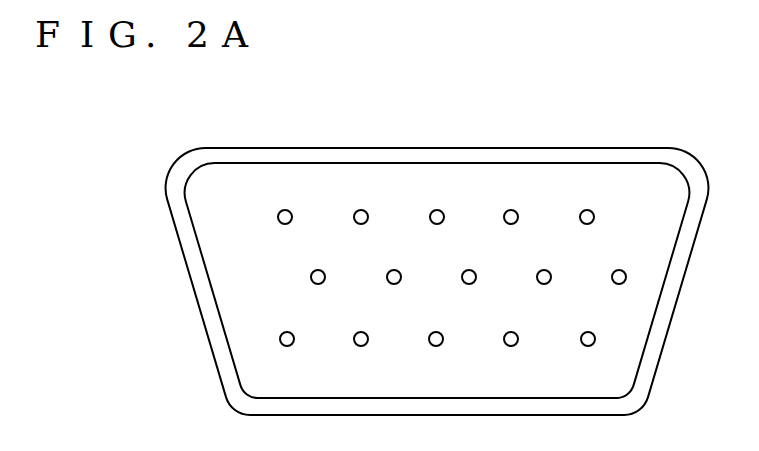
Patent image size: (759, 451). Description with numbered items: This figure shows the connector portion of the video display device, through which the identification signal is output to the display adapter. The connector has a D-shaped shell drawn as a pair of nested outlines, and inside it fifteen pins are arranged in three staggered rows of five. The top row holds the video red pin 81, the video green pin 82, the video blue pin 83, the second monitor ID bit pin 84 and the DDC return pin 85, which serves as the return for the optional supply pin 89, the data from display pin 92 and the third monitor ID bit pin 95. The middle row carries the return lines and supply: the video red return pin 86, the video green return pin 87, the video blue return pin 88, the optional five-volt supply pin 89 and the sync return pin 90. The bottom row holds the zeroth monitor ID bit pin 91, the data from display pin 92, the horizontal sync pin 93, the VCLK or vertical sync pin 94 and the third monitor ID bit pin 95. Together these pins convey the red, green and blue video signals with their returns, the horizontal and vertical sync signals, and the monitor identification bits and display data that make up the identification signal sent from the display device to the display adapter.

The video red pin 81 is at (587, 204).
The video green pin 82 is at (511, 204).
The video blue pin 83 is at (437, 204).
The monitor ID bit 2 pin 84 is at (361, 204).
The DDC return pin 85 is at (285, 204).
The video red return pin 86 is at (619, 264).
The video green return pin 87 is at (544, 264).
The video blue return pin 88 is at (469, 264).
The +5V supply pin 89 is at (394, 264).
The sync return pin 90 is at (318, 264).
The monitor ID bit 0 pin 91 is at (588, 326).
The data from display pin 92 is at (511, 326).
The horizontal sync pin 93 is at (436, 326).
The VCLK (vertical sync) pin 94 is at (361, 326).
The monitor ID bit 3 pin 95 is at (287, 326).